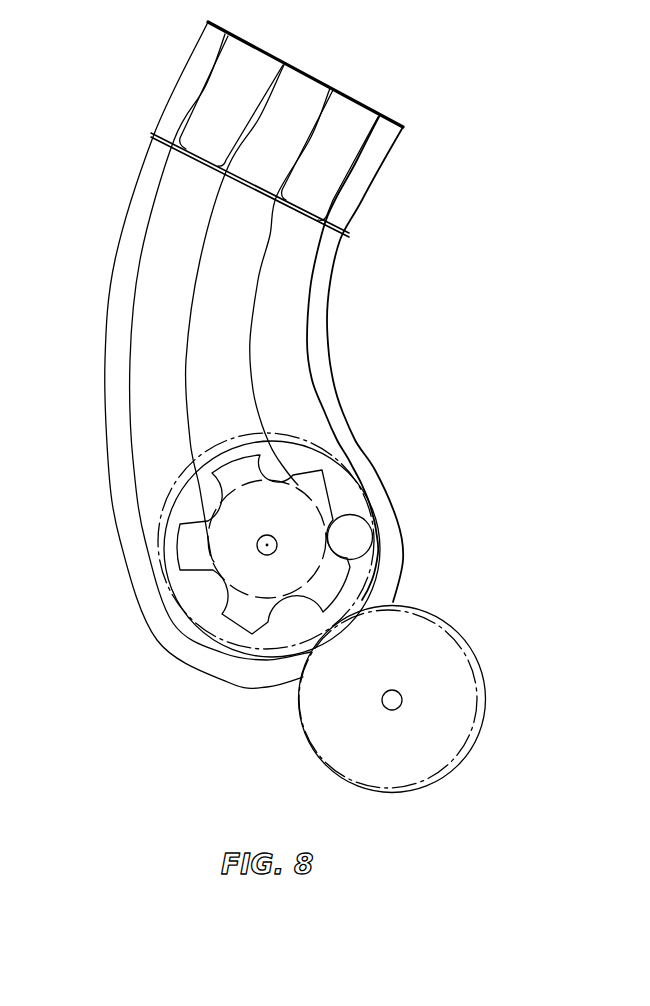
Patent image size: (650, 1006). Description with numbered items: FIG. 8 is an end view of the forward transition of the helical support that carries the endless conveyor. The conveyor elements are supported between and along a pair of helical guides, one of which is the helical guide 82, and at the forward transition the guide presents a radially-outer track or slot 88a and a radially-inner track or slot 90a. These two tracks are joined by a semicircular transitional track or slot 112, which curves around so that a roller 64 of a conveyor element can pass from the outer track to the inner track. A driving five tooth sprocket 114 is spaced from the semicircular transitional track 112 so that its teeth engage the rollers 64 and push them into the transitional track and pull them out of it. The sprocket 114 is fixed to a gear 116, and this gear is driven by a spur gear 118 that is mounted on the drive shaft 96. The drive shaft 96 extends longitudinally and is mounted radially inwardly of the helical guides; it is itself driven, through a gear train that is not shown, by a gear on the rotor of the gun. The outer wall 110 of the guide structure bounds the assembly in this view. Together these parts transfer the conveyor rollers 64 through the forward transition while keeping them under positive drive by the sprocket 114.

The radially-outer track or slot 88a is at (106, 321).
The radially-inner track or slot 90a is at (305, 299).
The helical guide 82 is at (340, 363).
The outer housing wall 110 is at (359, 423).
The semicircular transitional track or slot 112 is at (204, 638).
The gear 116 is at (168, 590).
The driving five tooth sprocket 114 is at (330, 497).
The roller 64 is at (378, 524).
The spur gear 118 is at (306, 741).
The drive shaft 96 is at (383, 705).